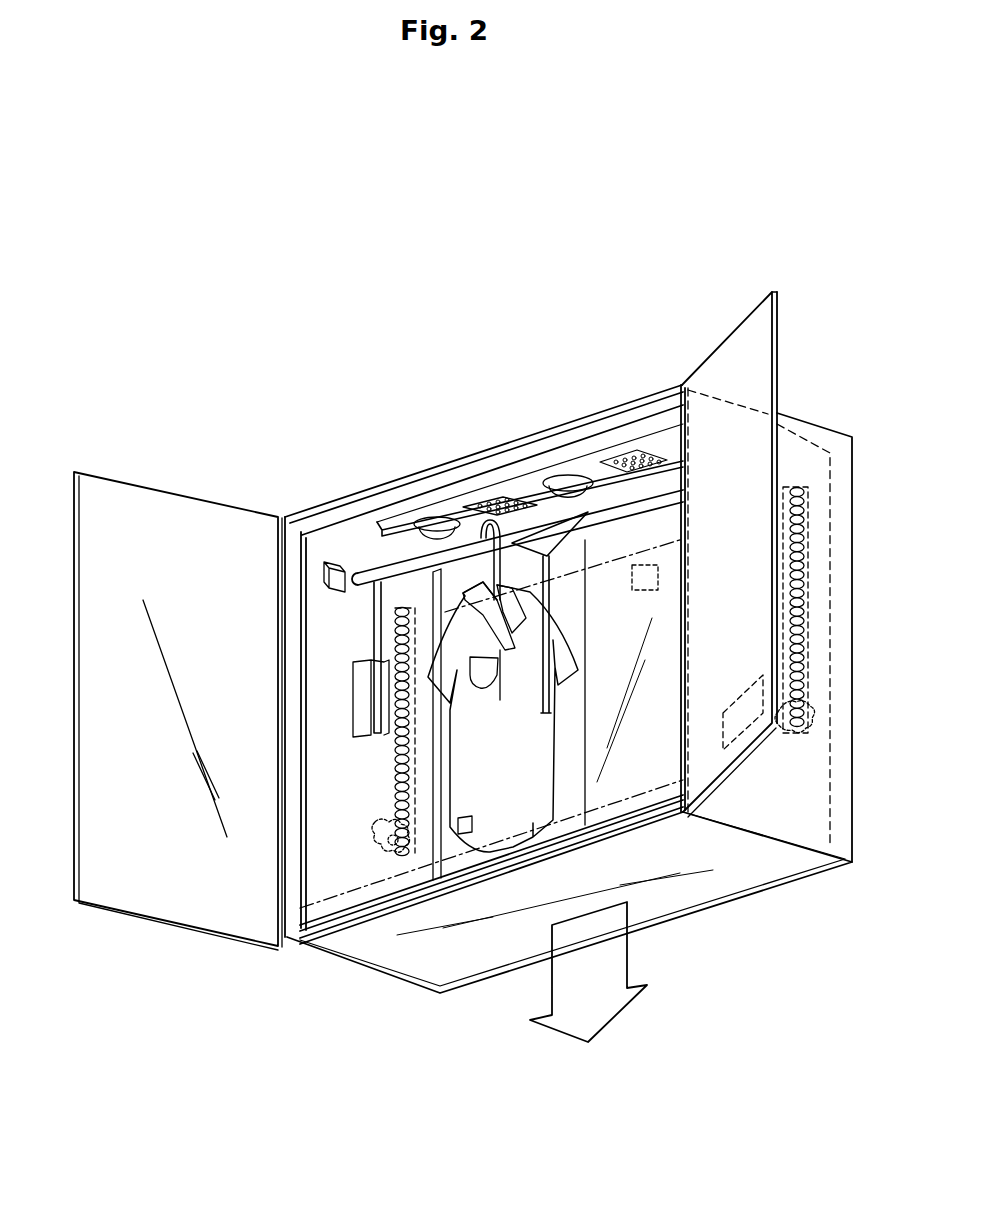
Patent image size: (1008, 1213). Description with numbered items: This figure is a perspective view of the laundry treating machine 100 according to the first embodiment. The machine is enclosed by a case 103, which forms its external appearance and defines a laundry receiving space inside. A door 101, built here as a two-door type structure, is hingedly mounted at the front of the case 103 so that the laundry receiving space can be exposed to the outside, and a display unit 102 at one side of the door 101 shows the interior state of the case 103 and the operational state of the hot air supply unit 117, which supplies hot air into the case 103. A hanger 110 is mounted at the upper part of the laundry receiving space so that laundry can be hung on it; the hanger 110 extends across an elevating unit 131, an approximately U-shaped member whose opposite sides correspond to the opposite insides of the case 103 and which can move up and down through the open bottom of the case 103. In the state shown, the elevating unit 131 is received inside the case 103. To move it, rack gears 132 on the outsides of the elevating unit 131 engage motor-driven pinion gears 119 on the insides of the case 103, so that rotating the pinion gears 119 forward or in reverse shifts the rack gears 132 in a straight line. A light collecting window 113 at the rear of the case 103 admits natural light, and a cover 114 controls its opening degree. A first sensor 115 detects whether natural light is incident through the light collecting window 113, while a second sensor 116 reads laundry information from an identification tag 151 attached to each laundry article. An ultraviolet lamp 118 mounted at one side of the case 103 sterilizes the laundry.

The laundry treating machine 100 is at (528, 270).
The door 101 is at (157, 513).
The display unit 102 is at (727, 730).
The case 103 is at (398, 477).
The hanger 110 is at (653, 487).
The light collecting window 113 is at (643, 772).
The cover 114 is at (667, 533).
The first sensor 115 is at (637, 567).
The second sensor 116 is at (338, 568).
The hot air supply unit 117 is at (492, 506).
The ultraviolet (UV) lamp 118 is at (563, 480).
The pinion gear 119 is at (385, 832).
The elevating unit 131 is at (368, 942).
The rack gear 132 is at (398, 782).
The identification tag 151 is at (468, 822).